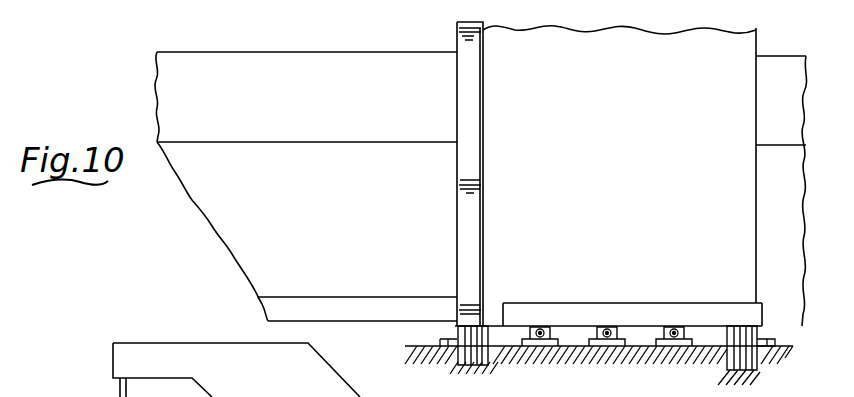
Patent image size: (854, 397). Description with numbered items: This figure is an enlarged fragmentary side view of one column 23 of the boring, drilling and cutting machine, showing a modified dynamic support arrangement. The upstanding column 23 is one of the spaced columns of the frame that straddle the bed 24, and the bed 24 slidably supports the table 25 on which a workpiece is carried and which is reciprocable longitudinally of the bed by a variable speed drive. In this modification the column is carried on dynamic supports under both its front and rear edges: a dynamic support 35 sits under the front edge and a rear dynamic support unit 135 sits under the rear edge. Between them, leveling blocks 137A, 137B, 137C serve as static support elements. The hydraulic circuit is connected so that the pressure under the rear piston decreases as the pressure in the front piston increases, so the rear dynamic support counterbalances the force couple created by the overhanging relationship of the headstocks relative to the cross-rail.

The column 23 is at (636, 183).
The bed 24 is at (392, 255).
The table 25 is at (374, 120).
The dynamic support 35 is at (466, 355).
The rear dynamic support unit 135 is at (750, 371).
The leveling block 137A is at (540, 351).
The leveling block 137B is at (607, 351).
The leveling block 137C is at (674, 351).